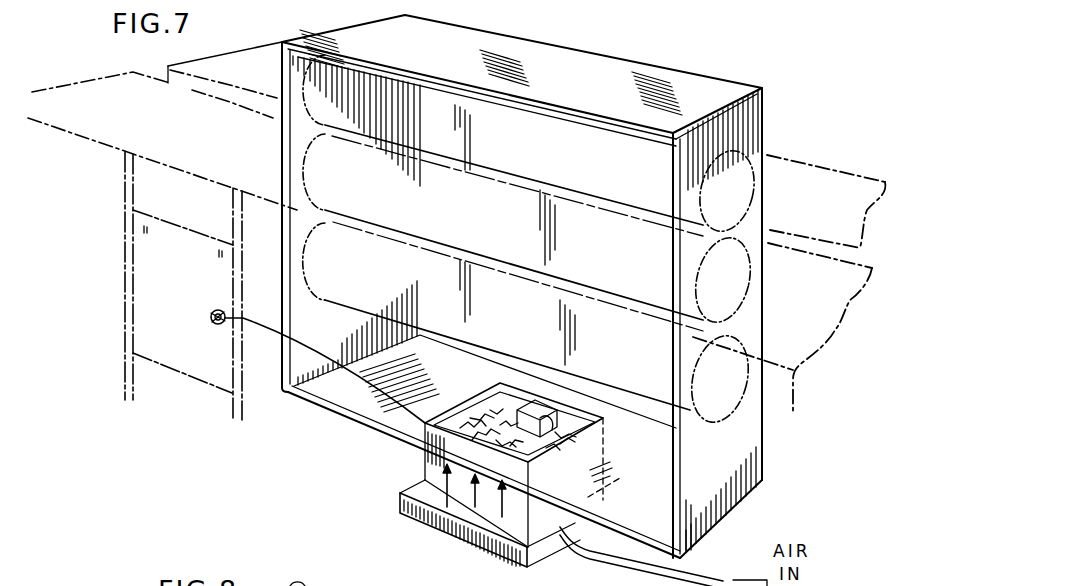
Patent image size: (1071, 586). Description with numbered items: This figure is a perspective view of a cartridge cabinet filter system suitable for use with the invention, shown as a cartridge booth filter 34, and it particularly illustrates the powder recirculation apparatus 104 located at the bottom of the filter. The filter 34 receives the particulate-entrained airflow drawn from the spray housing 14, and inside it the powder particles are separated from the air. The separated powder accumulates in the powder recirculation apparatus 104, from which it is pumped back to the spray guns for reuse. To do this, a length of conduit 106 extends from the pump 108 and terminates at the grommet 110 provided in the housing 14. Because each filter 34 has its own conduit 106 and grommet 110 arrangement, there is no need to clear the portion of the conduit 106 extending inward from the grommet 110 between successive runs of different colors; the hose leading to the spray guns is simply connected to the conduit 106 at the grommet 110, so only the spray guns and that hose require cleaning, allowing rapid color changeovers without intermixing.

The cartridge booth filter 34 is at (633, 36).
The spray housing 14 is at (175, 357).
The grommet 110 is at (212, 313).
The conduit 106 is at (262, 322).
The pump 108 is at (528, 398).
The powder recirculation apparatus 104 is at (416, 470).